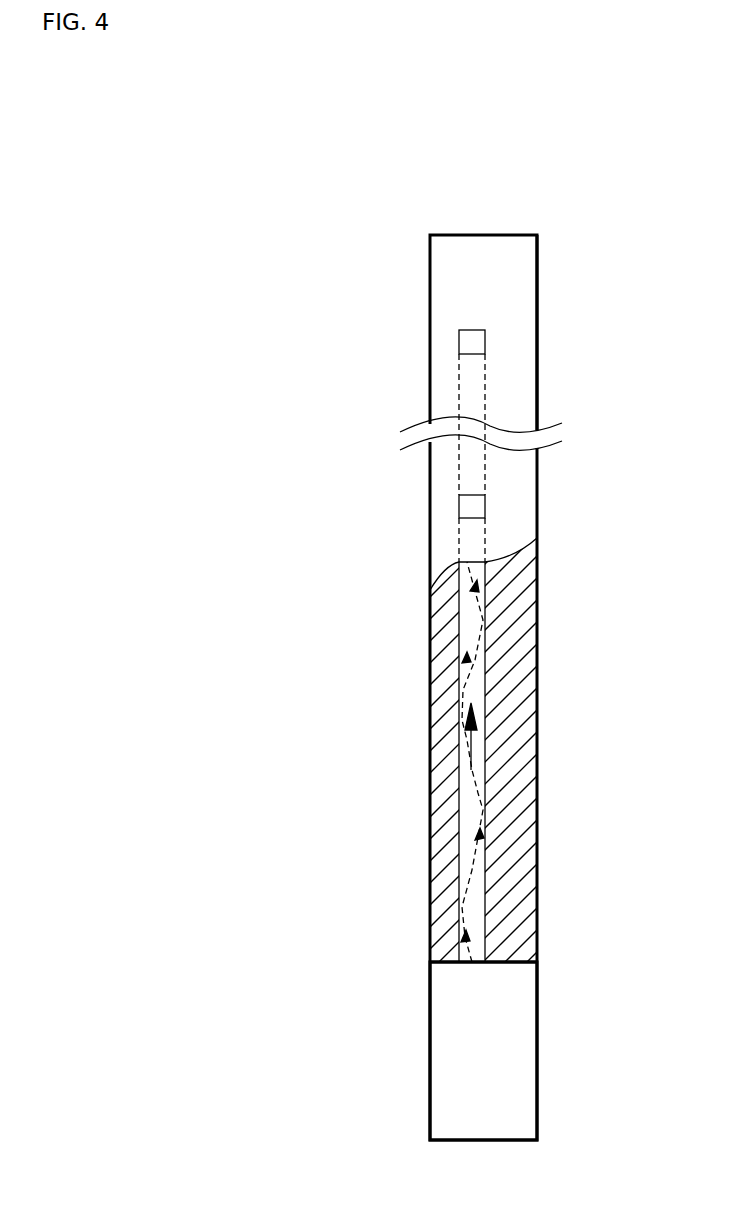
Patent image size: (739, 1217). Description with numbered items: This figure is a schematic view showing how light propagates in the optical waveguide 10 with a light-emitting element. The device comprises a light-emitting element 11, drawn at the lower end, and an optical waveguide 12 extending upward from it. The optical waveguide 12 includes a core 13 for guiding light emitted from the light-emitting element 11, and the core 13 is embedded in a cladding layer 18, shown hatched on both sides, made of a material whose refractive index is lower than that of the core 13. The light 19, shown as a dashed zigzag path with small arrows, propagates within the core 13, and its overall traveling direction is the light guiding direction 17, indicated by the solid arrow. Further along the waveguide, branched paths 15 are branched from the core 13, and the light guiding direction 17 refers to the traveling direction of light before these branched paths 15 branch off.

The optical waveguide with a light-emitting element 10 is at (544, 197).
The light-emitting element 11 is at (430, 1140).
The optical waveguide 12 is at (539, 330).
The core 13 is at (472, 618).
The branched paths 15 is at (458, 342).
The light guiding direction 17 is at (472, 810).
The cladding layer 18 is at (512, 744).
The light 19 is at (475, 670).